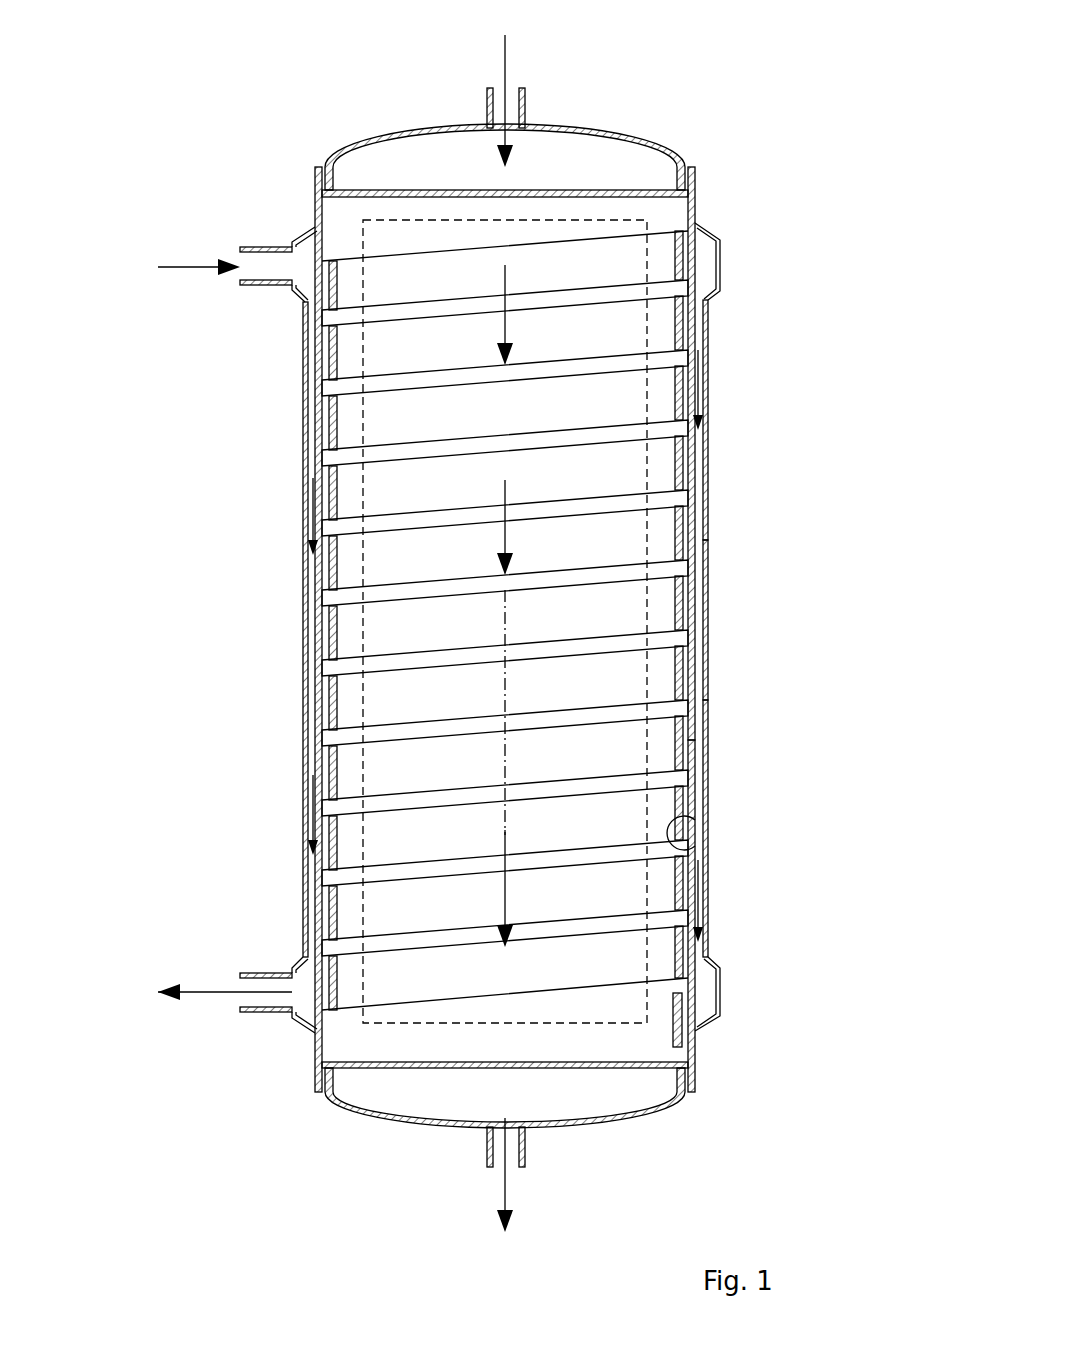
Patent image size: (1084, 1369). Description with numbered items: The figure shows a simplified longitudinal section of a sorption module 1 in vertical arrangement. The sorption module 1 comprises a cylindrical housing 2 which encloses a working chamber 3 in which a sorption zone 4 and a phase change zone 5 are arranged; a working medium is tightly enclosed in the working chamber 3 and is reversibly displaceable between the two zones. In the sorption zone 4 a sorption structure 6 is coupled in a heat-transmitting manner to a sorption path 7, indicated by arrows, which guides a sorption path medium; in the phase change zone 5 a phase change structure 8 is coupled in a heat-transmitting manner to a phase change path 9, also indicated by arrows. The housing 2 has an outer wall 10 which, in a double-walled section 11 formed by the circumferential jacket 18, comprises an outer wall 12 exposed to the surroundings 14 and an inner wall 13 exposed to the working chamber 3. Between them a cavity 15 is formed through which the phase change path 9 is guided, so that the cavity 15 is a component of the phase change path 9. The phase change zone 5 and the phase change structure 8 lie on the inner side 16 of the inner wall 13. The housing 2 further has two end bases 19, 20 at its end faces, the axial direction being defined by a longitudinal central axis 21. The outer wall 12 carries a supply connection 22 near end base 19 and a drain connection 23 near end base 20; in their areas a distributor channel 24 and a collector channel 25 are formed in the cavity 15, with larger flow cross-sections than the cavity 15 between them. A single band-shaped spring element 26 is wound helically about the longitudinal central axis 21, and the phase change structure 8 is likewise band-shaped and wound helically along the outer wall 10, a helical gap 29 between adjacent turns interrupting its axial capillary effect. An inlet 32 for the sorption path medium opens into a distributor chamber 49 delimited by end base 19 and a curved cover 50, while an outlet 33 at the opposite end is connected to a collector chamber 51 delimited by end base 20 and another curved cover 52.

The sorption module 1 is at (799, 139).
The housing 2 is at (288, 598).
The working chamber 3 is at (320, 645).
The sorption zone 4 is at (352, 768).
The phase change zone 5 is at (326, 428).
The sorption structure 6 is at (355, 703).
The sorption path 7 is at (507, 72).
The phase change structure 8 is at (685, 668).
The phase change path 9 is at (190, 262).
The outer wall 10 is at (722, 503).
The double-walled section 11 is at (778, 540).
The outer wall 12 is at (708, 803).
The inner wall 13 is at (692, 722).
The surroundings 14 is at (147, 612).
The cavity 15 is at (695, 763).
The inner side 16 is at (683, 852).
The jacket 18 is at (724, 581).
The end base 19 is at (596, 190).
The end base 20 is at (428, 1070).
The longitudinal central axis 21 is at (503, 688).
The supply connection 22 is at (264, 247).
The drain connection 23 is at (264, 972).
The distributor channel 24 is at (712, 262).
The collector channel 25 is at (712, 993).
The spring element 26 is at (700, 452).
The gap 29 is at (420, 520).
The inlet 32 is at (487, 103).
The outlet 33 is at (527, 1148).
The distributor chamber 49 is at (482, 172).
The curved cover 50 is at (648, 138).
The collector chamber 51 is at (577, 1105).
The curved cover 52 is at (360, 1118).